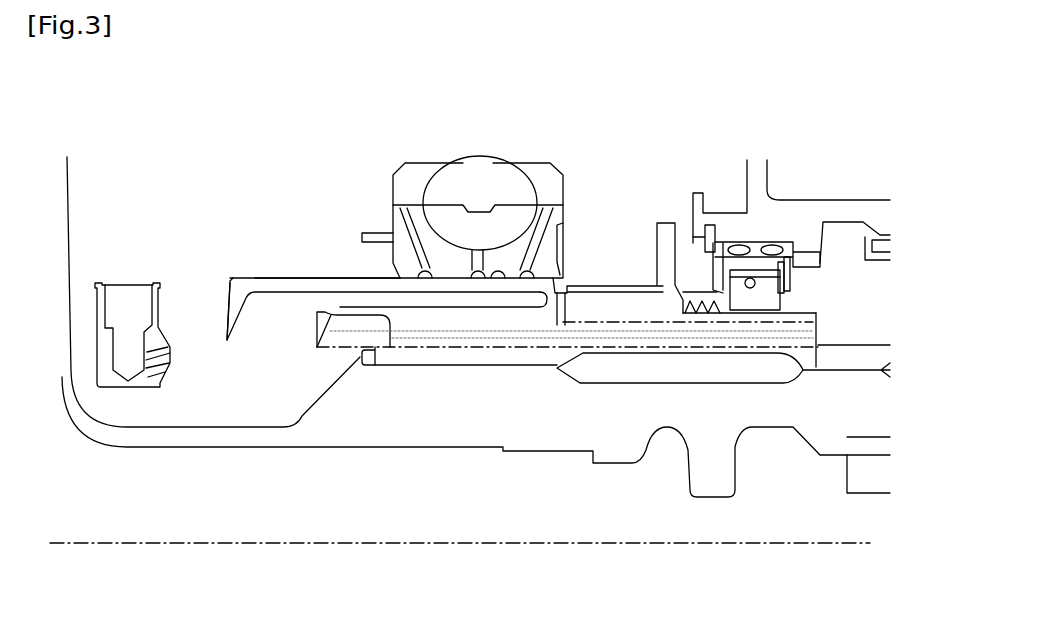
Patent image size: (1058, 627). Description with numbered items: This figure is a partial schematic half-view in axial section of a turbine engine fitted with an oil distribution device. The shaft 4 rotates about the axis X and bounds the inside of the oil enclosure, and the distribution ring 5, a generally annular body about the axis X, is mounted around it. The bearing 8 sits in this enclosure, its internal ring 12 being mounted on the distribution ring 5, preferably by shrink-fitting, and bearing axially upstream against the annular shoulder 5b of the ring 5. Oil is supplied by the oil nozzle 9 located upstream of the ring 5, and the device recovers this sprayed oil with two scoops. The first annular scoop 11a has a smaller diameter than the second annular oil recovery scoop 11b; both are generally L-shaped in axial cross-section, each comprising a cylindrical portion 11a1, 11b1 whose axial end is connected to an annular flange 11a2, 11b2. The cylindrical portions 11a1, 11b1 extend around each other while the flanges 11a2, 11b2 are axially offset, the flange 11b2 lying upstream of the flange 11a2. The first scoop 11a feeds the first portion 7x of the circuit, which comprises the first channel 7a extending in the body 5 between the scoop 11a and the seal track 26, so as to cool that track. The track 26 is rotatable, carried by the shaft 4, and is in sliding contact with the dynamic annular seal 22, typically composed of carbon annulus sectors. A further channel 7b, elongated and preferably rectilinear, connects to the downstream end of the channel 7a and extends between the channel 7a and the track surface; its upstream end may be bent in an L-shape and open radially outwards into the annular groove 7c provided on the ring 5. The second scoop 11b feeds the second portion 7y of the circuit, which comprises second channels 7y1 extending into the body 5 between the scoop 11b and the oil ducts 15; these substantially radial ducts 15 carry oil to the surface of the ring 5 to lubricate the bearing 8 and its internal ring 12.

The shaft 4 is at (565, 437).
The distribution ring 5 is at (512, 362).
The annular shoulder 5b is at (388, 292).
The first channel 7a is at (617, 337).
The further channel 7b is at (662, 287).
The annular groove 7c is at (572, 300).
The first portion of the circuit 7x is at (469, 362).
The second portion of the circuit 7y is at (372, 278).
The second channel 7y1 is at (410, 292).
The bearing 8 is at (569, 153).
The oil nozzle 9 is at (103, 355).
The first annular scoop 11a is at (332, 296).
The cylindrical portion of the first scoop 11a1 is at (375, 365).
The annular flange of the first scoop 11a2 is at (317, 312).
The second annular oil recovery scoop 11b is at (244, 292).
The cylindrical portion of the second scoop 11b1 is at (277, 283).
The annular flange of the second scoop 11b2 is at (227, 317).
The internal ring 12 is at (555, 226).
The oil ducts 15 is at (512, 292).
The dynamic annular seal 22 is at (839, 291).
The seal track 26 is at (818, 330).
The axis X is at (798, 543).